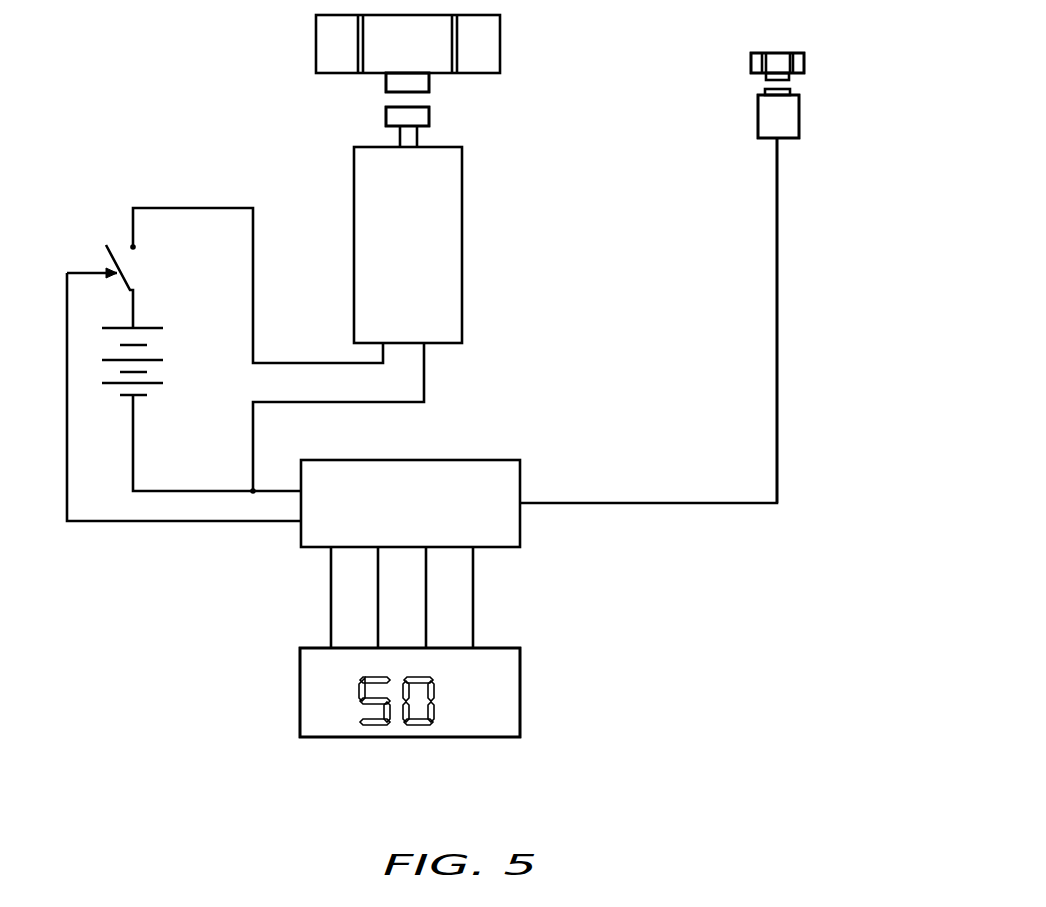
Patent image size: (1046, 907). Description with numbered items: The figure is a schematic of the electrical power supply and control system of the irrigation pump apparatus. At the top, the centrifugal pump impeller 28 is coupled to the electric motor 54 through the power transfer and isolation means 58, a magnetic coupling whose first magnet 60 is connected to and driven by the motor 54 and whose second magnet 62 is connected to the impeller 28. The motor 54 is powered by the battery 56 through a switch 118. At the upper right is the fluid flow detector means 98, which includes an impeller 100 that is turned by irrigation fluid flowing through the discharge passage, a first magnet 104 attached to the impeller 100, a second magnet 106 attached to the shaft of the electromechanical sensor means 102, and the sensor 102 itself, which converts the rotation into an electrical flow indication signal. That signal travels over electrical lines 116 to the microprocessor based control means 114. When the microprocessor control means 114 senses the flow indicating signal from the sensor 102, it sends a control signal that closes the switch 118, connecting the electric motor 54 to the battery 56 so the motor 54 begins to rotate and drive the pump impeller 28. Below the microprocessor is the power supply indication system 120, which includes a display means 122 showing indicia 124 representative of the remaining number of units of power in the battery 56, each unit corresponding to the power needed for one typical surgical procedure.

The centrifugal pump impeller 28 is at (326, 52).
The motor 54 is at (417, 241).
The power source 56 is at (148, 328).
The power transfer and isolation means 58 is at (407, 99).
The first magnet 60 is at (393, 115).
The second magnet 62 is at (388, 83).
The fluid flow detector means 98 is at (777, 95).
The impeller 100 is at (786, 53).
The electromechanical sensor means 102 is at (790, 127).
The first magnet 104 is at (790, 76).
The second magnet 106 is at (790, 92).
The microprocessor based control means 114 is at (416, 467).
The electrical lines 116 is at (779, 373).
The switch 118 is at (107, 250).
The power supply indication system 120 is at (323, 723).
The display means 122 is at (410, 692).
The indicia 124 is at (417, 722).